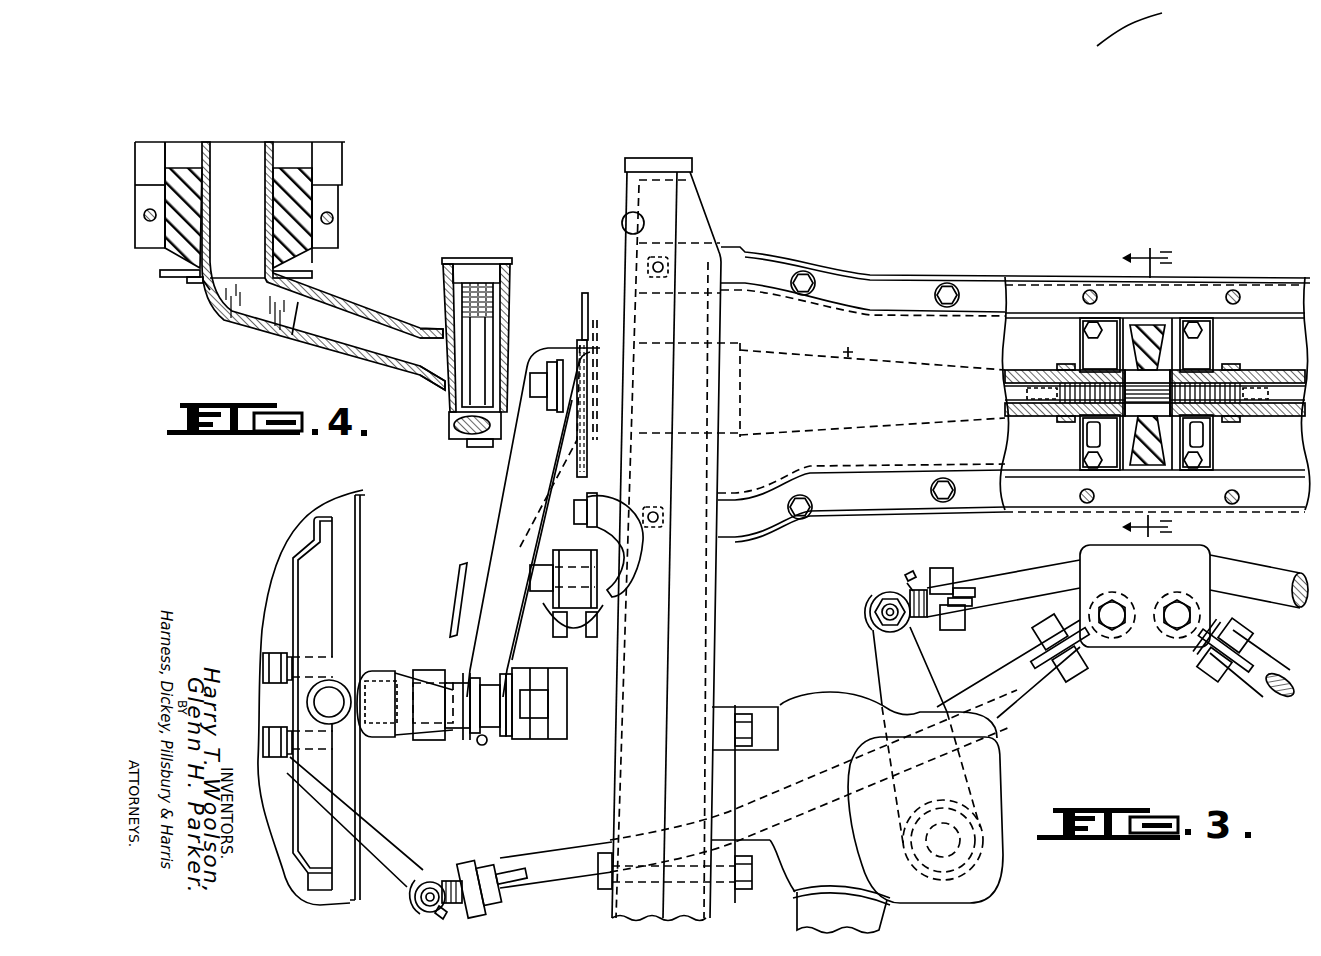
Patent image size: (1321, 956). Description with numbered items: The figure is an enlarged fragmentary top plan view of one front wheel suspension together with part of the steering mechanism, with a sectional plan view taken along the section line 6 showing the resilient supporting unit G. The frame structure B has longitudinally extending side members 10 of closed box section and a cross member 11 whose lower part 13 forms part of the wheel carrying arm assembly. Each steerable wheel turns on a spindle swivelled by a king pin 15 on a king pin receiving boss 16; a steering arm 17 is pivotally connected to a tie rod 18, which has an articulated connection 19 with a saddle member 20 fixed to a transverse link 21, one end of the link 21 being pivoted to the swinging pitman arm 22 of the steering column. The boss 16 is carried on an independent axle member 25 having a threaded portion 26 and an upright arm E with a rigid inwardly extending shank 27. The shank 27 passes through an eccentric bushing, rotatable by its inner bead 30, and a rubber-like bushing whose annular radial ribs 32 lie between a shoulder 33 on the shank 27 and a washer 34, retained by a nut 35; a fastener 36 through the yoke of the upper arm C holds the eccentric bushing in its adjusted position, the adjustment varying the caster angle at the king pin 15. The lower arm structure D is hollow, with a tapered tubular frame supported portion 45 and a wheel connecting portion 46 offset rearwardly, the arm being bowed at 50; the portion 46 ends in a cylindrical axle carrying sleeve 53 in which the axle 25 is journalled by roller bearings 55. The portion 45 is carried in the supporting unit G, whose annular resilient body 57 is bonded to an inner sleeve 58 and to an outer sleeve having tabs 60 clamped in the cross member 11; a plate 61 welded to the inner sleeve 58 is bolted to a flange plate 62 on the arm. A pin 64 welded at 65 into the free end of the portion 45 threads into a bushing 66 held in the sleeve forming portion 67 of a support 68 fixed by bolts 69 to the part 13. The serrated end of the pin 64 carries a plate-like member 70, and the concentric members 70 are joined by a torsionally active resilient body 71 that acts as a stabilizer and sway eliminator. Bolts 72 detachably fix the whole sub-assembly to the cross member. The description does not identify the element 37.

In FIG. 3, the section line 6- 6 is at (1132, 393).
In FIG. 3, the side members 10 is at (712, 208).
In FIG. 3, the cross member 11 is at (996, 272).
In FIG. 3, the lower part of cross member 13 is at (1237, 277).
In FIG. 3, the king pin 15 is at (312, 695).
In FIG. 3, the king pin receiving boss 16 is at (345, 673).
In FIG. 3, the steering arm 17 is at (400, 843).
In FIG. 3, the tie rod 18 is at (575, 858).
In FIG. 3, the articulated connection 19 is at (1113, 628).
In FIG. 3, the saddle member 20 is at (1145, 648).
In FIG. 3, the transverse link 21 is at (1014, 572).
In FIG. 3, the pitman arm 22 is at (922, 662).
In FIG. 3, the independent axle member 25 is at (468, 387).
In FIG. 3, the threaded portion 26 is at (463, 284).
In FIG. 3, the shank 27 is at (495, 740).
In FIG. 3, the inner bead 30 is at (488, 743).
In FIG. 3, the annular radial ribs 32 is at (476, 735).
In FIG. 3, the shoulder 33 is at (462, 743).
In FIG. 3, the washer 34 is at (560, 742).
In FIG. 3, the nut 35 is at (555, 700).
In FIG. 3, the fastener 36 is at (508, 738).
In FIG. 3, the bolt 37 is at (545, 400).
In FIG. 3, the tubular frame supported portion 45 is at (852, 352).
In FIG. 3, the hollow wheel connecting portion 46 is at (471, 514).
In FIG. 4, the bowed portion 50 is at (217, 318).
In FIG. 3, the axle carrying sleeve 53 is at (511, 262).
In FIG. 3, the bearings 55 is at (442, 324).
In FIG. 4, the annular body of resilient deformable material 57 is at (182, 262).
In FIG. 4, the inner sleeve 58 is at (277, 279).
In FIG. 4, the radially extending tabs 60 is at (146, 190).
In FIG. 4, the plate 61 is at (190, 280).
In FIG. 3, the plate 61 is at (584, 294).
In FIG. 4, the flange forming plate 62 is at (203, 283).
In FIG. 3, the flange forming plate 62 is at (578, 450).
In FIG. 3, the pin 64 is at (1058, 420).
In FIG. 3, the welding 65 is at (1066, 370).
In FIG. 3, the bushing 66 is at (1085, 425).
In FIG. 3, the sleeve forming portion 67 is at (1202, 338).
In FIG. 3, the support 68 is at (1118, 326).
In FIG. 3, the bolts 69 is at (1239, 298).
In FIG. 3, the plate-like member 70 is at (1122, 471).
In FIG. 3, the body of resilient deformable material 71 is at (1153, 326).
In FIG. 3, the bolts 72 is at (803, 296).